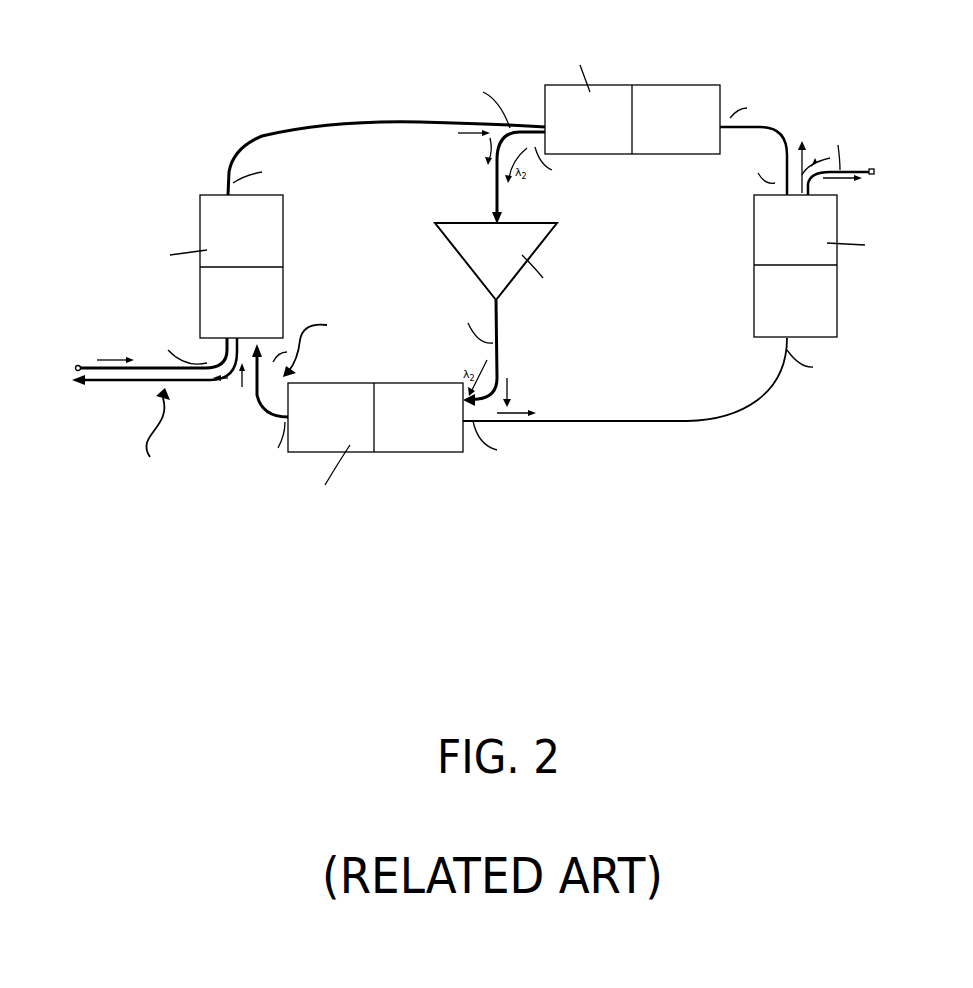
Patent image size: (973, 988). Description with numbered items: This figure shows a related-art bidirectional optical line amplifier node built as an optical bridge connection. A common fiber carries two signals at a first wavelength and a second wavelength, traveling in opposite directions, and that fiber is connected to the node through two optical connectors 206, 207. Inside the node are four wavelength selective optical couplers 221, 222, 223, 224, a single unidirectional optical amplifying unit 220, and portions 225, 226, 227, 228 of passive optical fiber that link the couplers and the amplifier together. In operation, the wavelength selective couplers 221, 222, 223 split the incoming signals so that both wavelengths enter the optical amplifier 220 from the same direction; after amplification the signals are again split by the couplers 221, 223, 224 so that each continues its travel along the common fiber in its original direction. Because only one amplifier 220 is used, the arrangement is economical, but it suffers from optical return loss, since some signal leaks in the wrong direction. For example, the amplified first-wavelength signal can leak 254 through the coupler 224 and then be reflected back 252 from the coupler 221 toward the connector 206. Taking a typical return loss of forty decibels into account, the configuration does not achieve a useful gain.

The optical connector 206 is at (78, 366).
The optical connector 207 is at (875, 174).
The unidirectional optical amplifying unit 220 is at (518, 222).
The wavelength selective optical coupler 221 is at (200, 238).
The wavelength selective optical coupler 222 is at (660, 85).
The wavelength selective optical coupler 223 is at (833, 293).
The wavelength selective optical coupler 224 is at (390, 452).
The portion of passive optical fiber 225 is at (277, 130).
The portion of passive optical fiber 226 is at (775, 130).
The portion of passive optical fiber 227 is at (693, 422).
The portion of passive optical fiber 228 is at (260, 407).
The reflected leaked signal 252 is at (152, 440).
The leakage of amplified signal λ1 254 is at (329, 340).